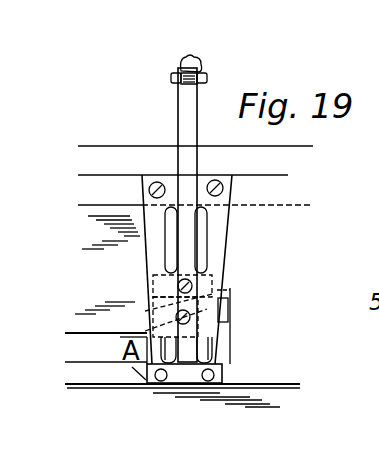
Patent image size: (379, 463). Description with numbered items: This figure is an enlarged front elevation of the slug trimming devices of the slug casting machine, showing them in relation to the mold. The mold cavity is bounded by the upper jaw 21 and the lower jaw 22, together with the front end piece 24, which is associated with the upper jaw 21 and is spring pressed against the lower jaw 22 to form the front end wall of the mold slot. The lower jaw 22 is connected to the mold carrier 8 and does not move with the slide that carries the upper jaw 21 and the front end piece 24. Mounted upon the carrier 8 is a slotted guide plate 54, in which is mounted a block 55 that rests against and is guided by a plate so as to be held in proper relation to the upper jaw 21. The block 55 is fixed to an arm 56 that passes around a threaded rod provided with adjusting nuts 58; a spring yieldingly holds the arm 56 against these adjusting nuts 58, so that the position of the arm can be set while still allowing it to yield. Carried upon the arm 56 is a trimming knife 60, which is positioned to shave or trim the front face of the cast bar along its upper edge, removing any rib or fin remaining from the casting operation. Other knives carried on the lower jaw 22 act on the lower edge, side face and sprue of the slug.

The mold carrier 8 is at (285, 183).
The upper jaw 21 is at (140, 332).
The lower jaw 22 is at (83, 378).
The front end piece 24 is at (147, 358).
The slotted guide plate 54 is at (233, 181).
The block 55 is at (220, 266).
The arm 56 is at (186, 125).
The adjusting nuts 58 is at (206, 63).
The trimming knife 60 is at (222, 312).